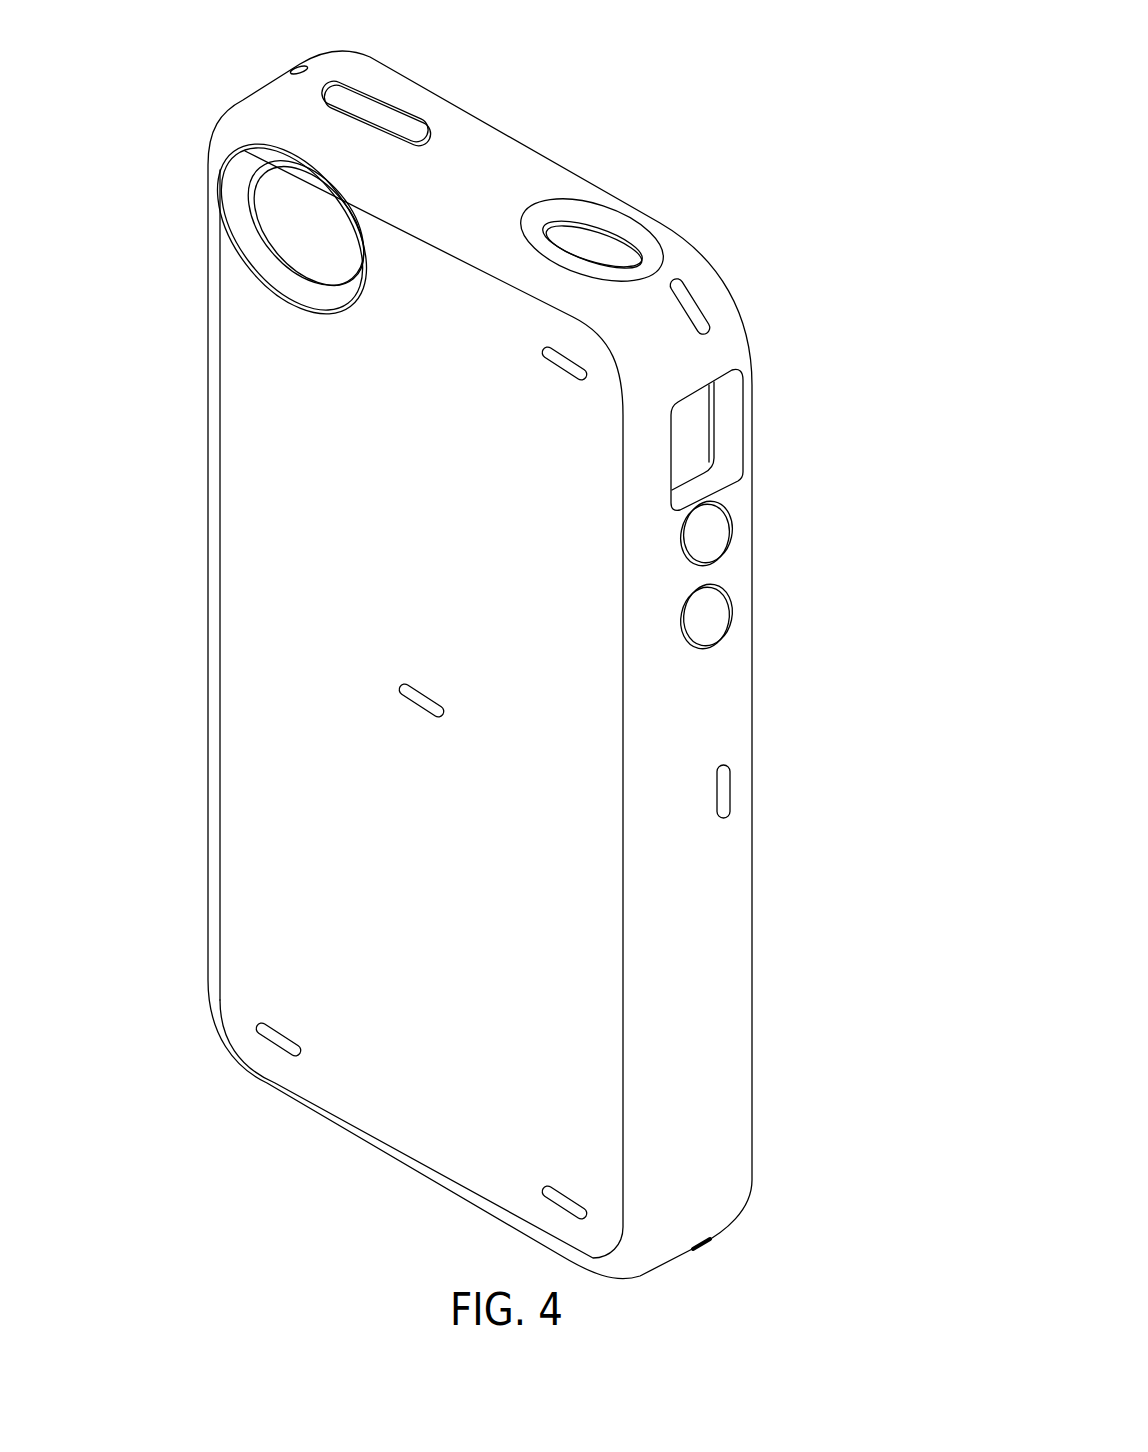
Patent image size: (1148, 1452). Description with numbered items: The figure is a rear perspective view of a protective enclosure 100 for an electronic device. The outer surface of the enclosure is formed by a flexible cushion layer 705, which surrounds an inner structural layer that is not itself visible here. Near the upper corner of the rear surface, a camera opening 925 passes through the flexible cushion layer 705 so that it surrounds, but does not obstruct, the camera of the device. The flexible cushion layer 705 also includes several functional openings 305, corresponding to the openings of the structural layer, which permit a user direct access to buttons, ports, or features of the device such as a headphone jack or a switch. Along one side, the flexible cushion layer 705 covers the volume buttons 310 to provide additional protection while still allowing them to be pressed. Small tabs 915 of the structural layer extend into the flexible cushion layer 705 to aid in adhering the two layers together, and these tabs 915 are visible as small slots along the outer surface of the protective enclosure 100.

The protective enclosure 100 is at (689, 133).
The functional openings 305 is at (375, 107).
The volume buttons 310 is at (713, 535).
The flexible cushion layer 705 is at (697, 992).
The tabs 915 is at (293, 69).
The camera opening 925 is at (283, 207).